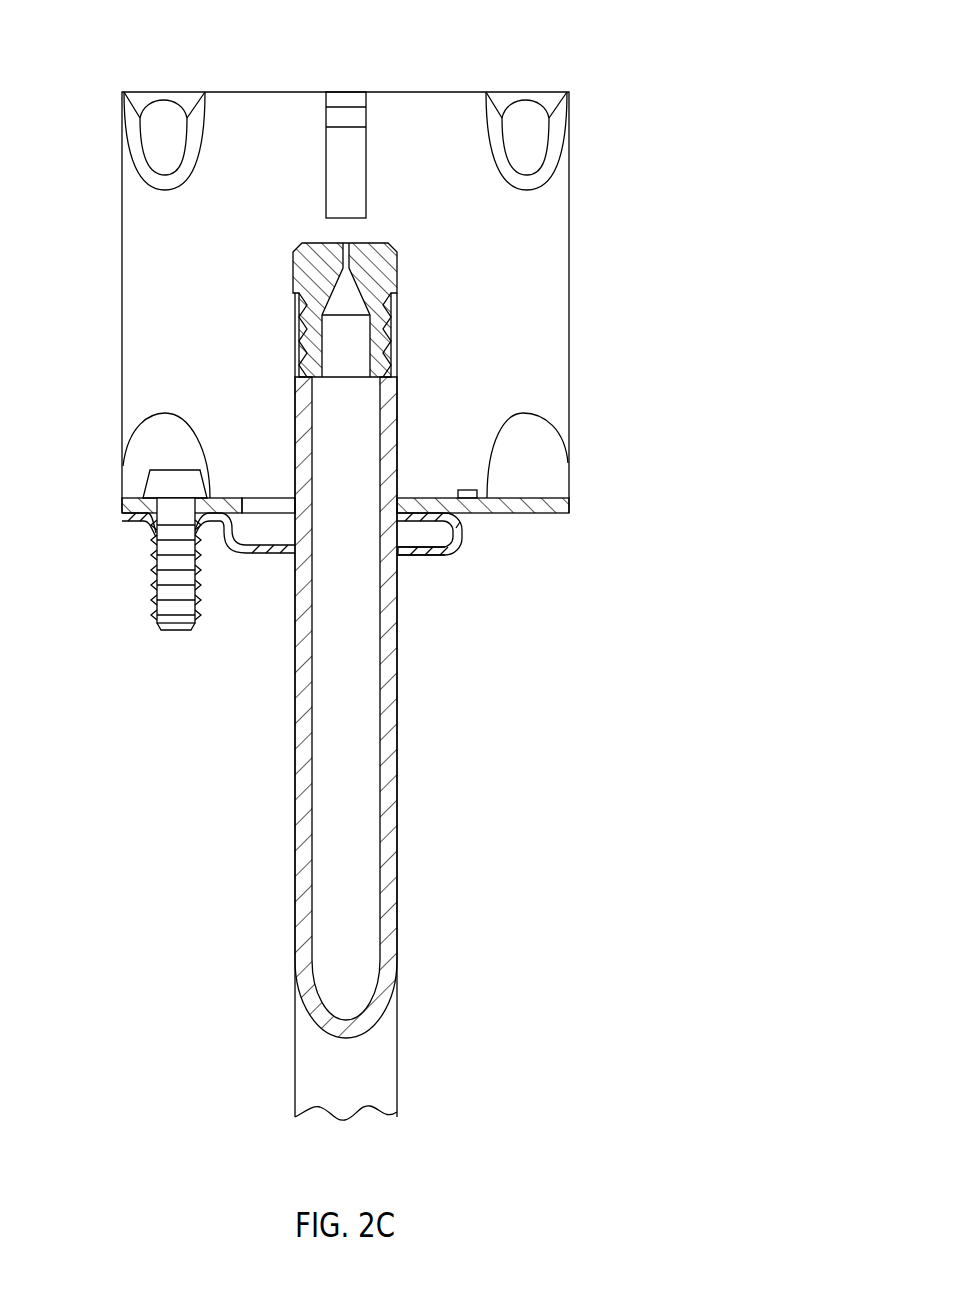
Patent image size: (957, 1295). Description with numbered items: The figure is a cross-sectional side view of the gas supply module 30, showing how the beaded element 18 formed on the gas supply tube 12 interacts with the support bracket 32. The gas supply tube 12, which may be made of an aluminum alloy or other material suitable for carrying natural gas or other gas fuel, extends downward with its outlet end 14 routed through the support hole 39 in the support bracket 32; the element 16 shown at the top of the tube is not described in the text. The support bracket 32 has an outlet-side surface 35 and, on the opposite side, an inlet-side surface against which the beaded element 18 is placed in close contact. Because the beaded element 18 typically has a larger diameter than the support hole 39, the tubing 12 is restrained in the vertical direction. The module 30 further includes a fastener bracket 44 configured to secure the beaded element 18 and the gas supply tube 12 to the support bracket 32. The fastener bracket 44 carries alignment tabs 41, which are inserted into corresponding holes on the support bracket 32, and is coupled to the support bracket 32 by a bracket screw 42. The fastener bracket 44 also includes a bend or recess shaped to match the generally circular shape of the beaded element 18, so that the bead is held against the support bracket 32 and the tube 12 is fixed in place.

The gas supply tube 12 is at (398, 705).
The outlet end 14 is at (397, 397).
The threaded insert 16 is at (372, 243).
The beaded element 18 is at (461, 571).
The gas supply module 30 is at (460, 288).
The support bracket 32 is at (543, 88).
The outlet-side surface 35 is at (146, 92).
The support hole 39 is at (400, 497).
The alignment tab 41 is at (485, 498).
The bracket screw 42 is at (150, 568).
The fastener bracket 44 is at (415, 553).